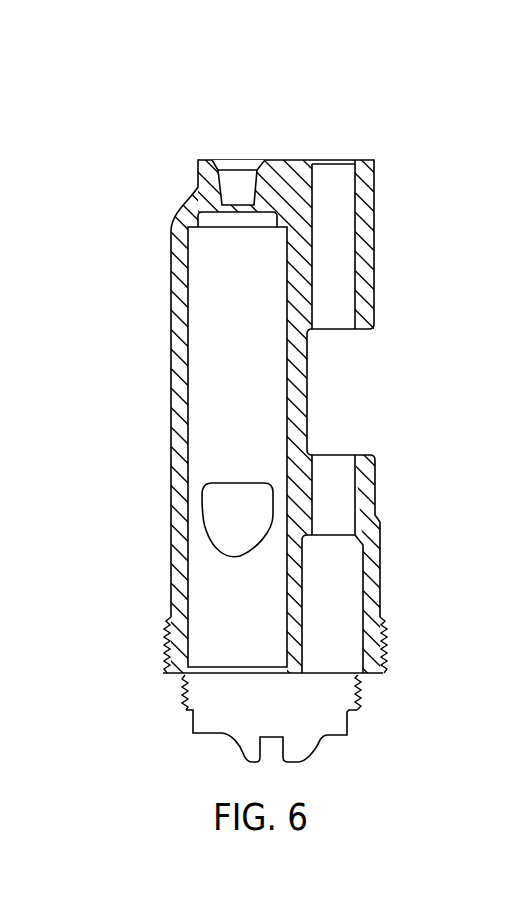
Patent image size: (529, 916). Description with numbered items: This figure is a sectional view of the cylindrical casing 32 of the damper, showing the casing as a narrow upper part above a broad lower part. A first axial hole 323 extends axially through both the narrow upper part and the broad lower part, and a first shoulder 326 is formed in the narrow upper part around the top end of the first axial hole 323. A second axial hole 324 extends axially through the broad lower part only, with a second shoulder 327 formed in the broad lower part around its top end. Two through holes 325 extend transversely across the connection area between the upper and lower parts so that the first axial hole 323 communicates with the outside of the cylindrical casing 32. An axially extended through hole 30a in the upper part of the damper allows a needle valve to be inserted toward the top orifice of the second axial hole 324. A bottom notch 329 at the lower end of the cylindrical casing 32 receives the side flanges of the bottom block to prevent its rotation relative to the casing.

The cylindrical casing 32 is at (333, 132).
The bottom notch 329 is at (528, 171).
The axially extended through hole 30a is at (337, 260).
The first shoulder 326 is at (212, 198).
The first axial hole 323 is at (217, 352).
The through holes 325 is at (228, 520).
The second shoulder 327 is at (364, 528).
The second axial hole 324 is at (342, 588).